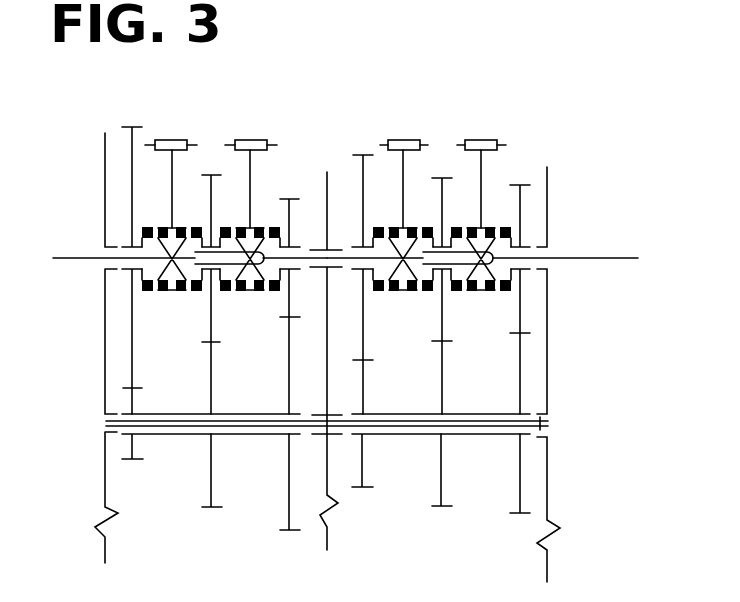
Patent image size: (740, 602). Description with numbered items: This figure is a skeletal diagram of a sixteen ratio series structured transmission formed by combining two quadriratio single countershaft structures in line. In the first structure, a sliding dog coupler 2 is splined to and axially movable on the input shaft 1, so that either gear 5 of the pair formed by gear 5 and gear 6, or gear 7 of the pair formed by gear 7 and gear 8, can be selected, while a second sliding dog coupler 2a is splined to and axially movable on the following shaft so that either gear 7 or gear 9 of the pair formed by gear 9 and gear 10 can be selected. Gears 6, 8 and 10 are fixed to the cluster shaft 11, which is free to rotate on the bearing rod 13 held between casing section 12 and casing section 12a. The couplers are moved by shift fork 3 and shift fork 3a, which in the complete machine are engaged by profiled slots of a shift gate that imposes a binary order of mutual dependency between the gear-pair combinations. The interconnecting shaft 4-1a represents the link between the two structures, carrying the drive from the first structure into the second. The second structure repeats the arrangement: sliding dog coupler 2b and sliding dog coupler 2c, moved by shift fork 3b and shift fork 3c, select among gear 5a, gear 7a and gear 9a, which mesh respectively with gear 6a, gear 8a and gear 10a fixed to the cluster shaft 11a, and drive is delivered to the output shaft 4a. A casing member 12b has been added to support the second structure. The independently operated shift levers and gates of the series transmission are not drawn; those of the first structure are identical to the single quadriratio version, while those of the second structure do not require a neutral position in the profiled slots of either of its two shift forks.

The input shaft 1 is at (592, 258).
The sliding dog coupler 2 is at (470, 295).
The sliding dog coupler 2a is at (393, 295).
The sliding dog coupler 2b is at (238, 293).
The sliding dog coupler 2c is at (162, 293).
The shift fork 3 is at (490, 142).
The shift fork 3a is at (398, 142).
The shift fork 3b is at (260, 143).
The shift fork 3c is at (163, 143).
The output shaft 4a is at (77, 257).
The interconnecting shaft 4-1a is at (352, 248).
The gear 5 is at (520, 235).
The gear 5a is at (289, 232).
The gear 6 is at (517, 487).
The gear 6a is at (287, 507).
The gear 7 is at (442, 215).
The gear 7a is at (211, 217).
The gear 8 is at (438, 484).
The gear 8a is at (207, 486).
The gear 9 is at (363, 192).
The gear 9a is at (132, 203).
The gear 10 is at (363, 458).
The gear 10a is at (133, 447).
The cluster shaft 11 is at (397, 413).
The cluster shaft 11a is at (240, 412).
The casing section 12 is at (547, 495).
The casing section 12a is at (327, 543).
The casing member 12b is at (105, 552).
The bearing rod 13 is at (475, 423).